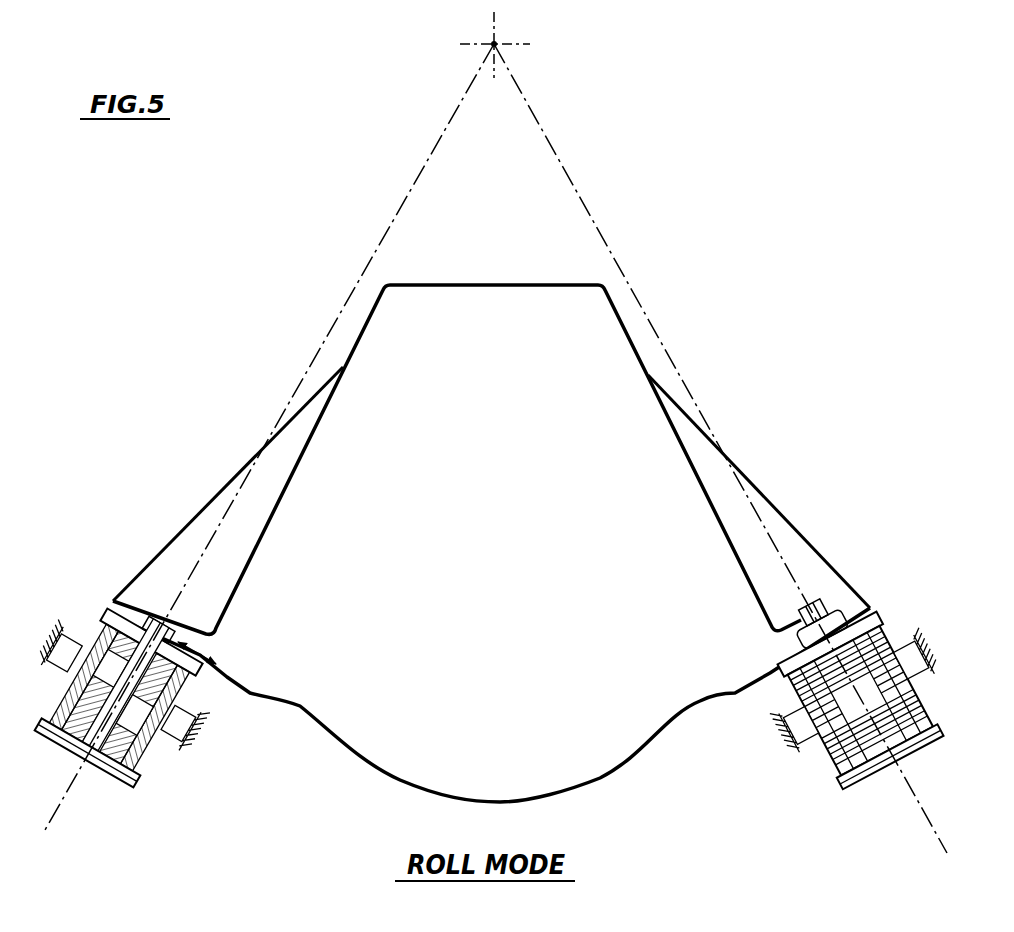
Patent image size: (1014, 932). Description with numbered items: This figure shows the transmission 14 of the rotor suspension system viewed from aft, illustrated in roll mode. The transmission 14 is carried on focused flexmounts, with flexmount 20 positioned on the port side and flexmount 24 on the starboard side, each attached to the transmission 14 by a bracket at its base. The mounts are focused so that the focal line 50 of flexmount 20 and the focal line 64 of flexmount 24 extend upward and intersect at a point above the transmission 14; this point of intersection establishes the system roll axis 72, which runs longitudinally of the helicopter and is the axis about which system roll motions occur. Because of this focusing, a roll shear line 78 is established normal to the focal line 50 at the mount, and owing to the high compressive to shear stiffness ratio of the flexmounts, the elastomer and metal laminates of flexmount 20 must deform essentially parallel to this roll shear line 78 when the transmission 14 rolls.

The transmission 14 is at (508, 524).
The flexmount 20 is at (120, 717).
The flexmount 24 is at (851, 710).
The focal line 50 is at (331, 330).
The focal line 64 is at (652, 323).
The system roll axis 72 is at (497, 43).
The roll shear line 78 is at (205, 651).